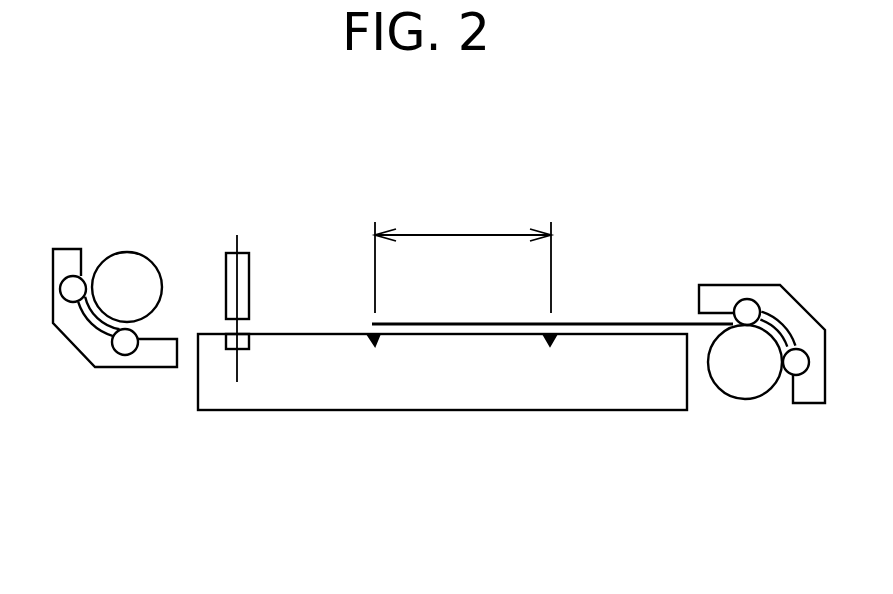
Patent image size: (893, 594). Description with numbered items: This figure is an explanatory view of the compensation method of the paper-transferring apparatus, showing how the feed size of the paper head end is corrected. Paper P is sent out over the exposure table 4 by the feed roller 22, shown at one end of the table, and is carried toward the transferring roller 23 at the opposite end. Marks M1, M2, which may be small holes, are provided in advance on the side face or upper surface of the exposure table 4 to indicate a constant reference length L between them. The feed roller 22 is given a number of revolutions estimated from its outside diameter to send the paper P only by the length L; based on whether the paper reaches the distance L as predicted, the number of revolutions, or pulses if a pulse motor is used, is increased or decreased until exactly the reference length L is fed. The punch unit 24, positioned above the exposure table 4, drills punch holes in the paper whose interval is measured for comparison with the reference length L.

The exposure table 4 is at (235, 397).
The feed roller 22 is at (740, 385).
The transferring roller 23 is at (125, 272).
The punch unit 24 is at (245, 278).
The paper P is at (628, 324).
The reference length L is at (463, 227).
The first mark M1 is at (375, 345).
The second mark M2 is at (550, 345).